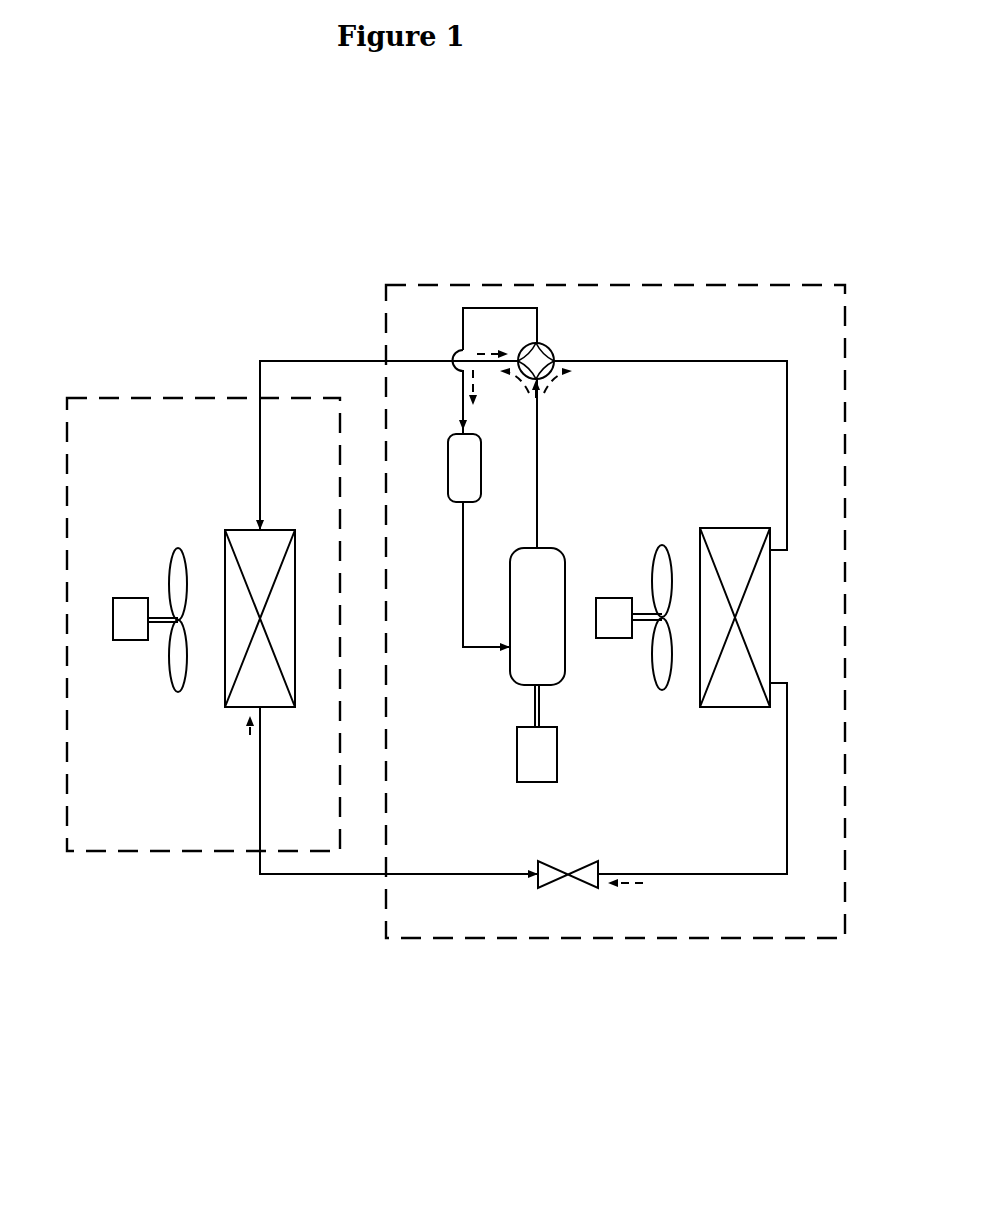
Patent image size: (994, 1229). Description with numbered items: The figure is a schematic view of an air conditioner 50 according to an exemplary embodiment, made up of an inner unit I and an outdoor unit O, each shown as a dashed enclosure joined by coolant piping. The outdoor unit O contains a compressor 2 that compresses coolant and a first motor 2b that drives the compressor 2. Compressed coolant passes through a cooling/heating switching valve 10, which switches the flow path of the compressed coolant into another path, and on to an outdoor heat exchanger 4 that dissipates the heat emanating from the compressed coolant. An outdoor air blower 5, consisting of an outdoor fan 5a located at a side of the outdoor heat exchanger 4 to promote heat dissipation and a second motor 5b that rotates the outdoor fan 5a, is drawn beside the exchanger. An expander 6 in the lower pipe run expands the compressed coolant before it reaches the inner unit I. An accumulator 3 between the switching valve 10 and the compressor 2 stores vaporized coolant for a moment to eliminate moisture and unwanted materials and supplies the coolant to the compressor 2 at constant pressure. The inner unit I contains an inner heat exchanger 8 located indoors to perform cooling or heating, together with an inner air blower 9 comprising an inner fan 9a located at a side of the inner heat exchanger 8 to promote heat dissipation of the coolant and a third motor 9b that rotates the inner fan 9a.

The air conditioner 50 is at (782, 204).
The cooling/heating switching valve 10 is at (549, 347).
The accumulator 3 is at (448, 470).
The compressor 2 is at (537, 653).
The first motor 2b is at (557, 752).
The outdoor air blower 5 is at (628, 560).
The outdoor fan 5a is at (663, 558).
The second motor 5b is at (612, 606).
The outdoor heat exchanger 4 is at (750, 603).
The expander 6 is at (588, 886).
The inner heat exchanger 8 is at (267, 692).
The inner air blower 9 is at (128, 756).
The inner fan 9a is at (180, 675).
The third motor 9b is at (127, 628).
The inner unit I is at (210, 850).
The outdoor unit O is at (663, 946).